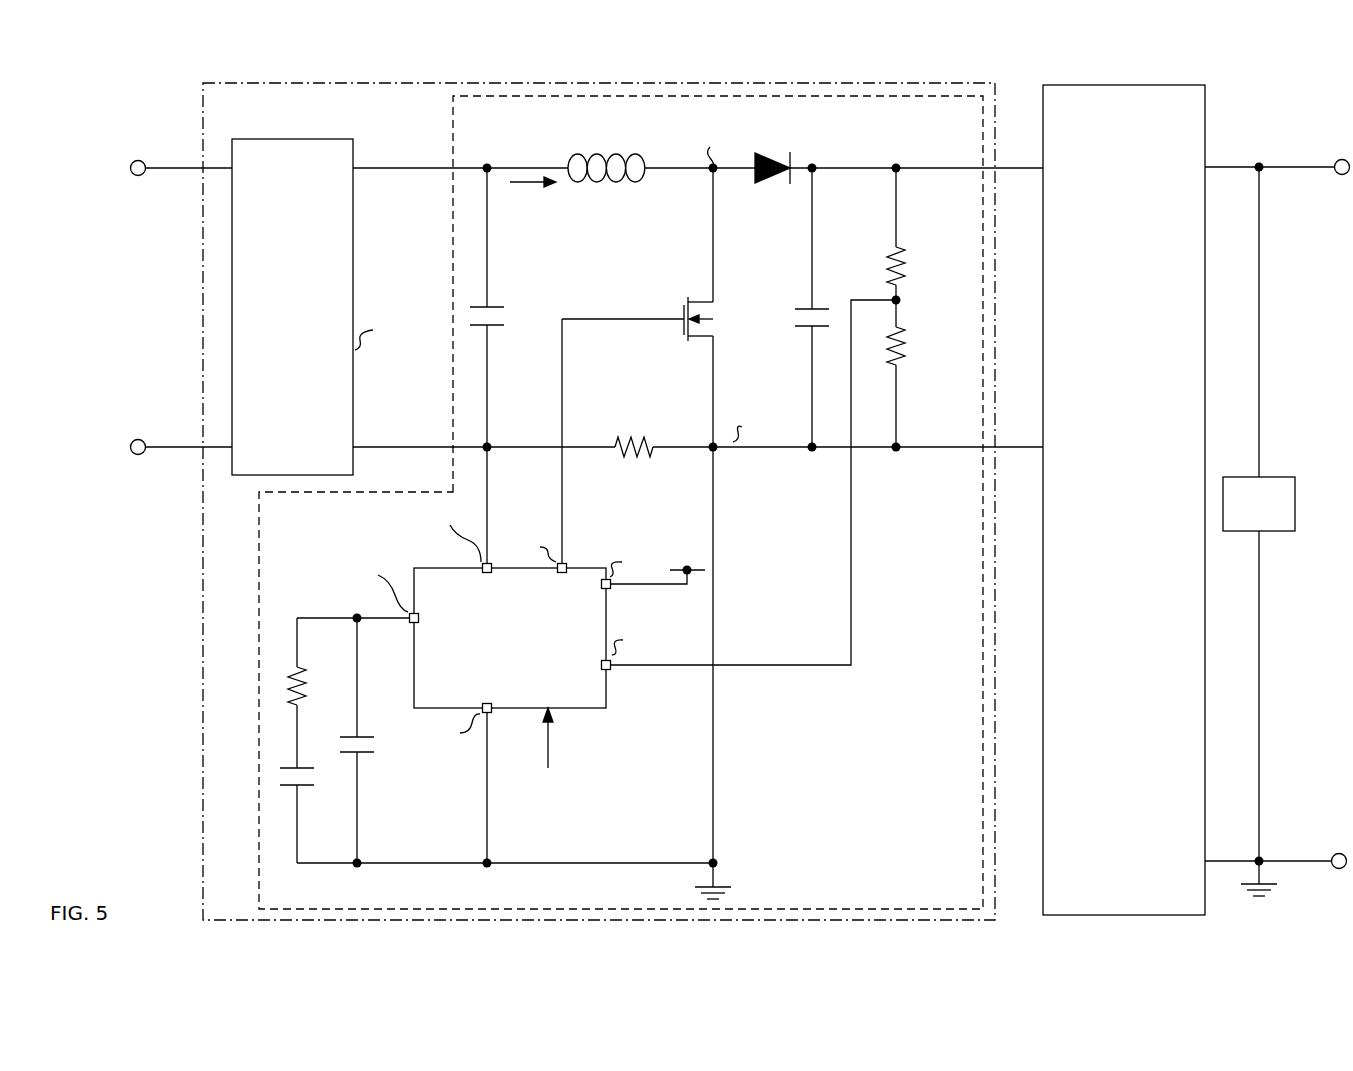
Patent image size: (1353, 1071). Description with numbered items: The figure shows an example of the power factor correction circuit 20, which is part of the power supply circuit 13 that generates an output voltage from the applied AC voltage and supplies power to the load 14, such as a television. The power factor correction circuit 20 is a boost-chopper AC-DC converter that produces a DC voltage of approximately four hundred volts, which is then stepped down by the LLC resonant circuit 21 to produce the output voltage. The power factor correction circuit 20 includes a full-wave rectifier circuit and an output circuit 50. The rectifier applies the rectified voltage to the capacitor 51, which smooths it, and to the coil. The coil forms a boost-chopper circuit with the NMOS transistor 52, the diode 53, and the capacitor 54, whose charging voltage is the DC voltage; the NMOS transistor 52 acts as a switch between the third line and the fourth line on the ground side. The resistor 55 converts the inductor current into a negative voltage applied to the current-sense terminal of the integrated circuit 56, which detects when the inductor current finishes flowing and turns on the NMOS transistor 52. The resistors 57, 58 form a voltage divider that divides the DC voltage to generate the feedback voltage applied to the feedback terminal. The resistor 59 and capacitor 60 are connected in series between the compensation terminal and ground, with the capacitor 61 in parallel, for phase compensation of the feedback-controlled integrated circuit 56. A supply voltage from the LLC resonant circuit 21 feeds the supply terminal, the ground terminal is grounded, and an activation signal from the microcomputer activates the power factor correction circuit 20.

The power supply circuit 13 is at (1212, 60).
The load 14 is at (1281, 531).
The power factor correction circuit 20 is at (553, 83).
The LLC resonant circuit 21 is at (1090, 85).
The output circuit 50 is at (453, 258).
The capacitor 51 is at (502, 303).
The NMOS transistor 52 is at (695, 294).
The diode 53 is at (755, 185).
The capacitor 54 is at (830, 310).
The resistor 55 is at (643, 436).
The integrated circuit 56 is at (423, 565).
The resistor 57 is at (908, 272).
The resistor 58 is at (910, 348).
The resistor 59 is at (307, 690).
The capacitor 60 is at (300, 765).
The capacitor 61 is at (370, 753).